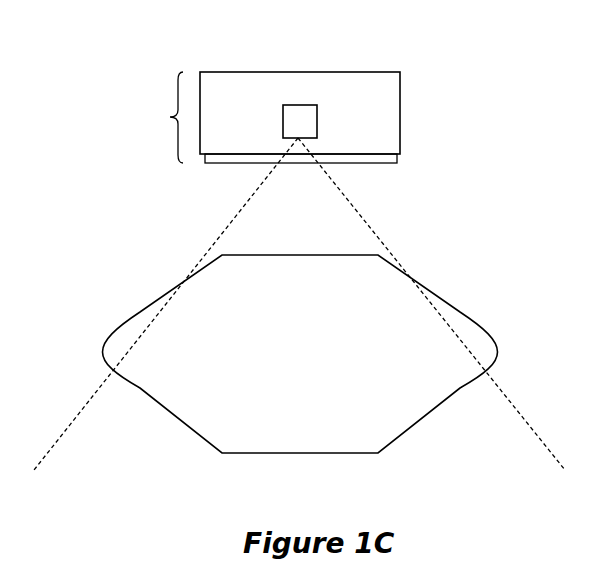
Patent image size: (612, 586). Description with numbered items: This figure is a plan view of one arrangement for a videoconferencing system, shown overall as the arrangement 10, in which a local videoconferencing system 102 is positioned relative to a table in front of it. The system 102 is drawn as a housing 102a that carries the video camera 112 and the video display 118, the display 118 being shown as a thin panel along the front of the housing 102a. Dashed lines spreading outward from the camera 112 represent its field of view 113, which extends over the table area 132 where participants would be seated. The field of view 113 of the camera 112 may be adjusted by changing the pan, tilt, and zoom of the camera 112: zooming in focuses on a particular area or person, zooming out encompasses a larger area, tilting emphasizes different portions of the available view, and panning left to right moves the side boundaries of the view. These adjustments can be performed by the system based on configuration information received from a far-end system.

The imaging system 10 is at (539, 74).
The local videoconferencing system 102 is at (296, 116).
The camera housing 102a is at (334, 90).
The video camera 112 is at (267, 86).
The field of view 113 is at (299, 304).
The video display 118 is at (326, 180).
The object / target region 132 is at (300, 354).